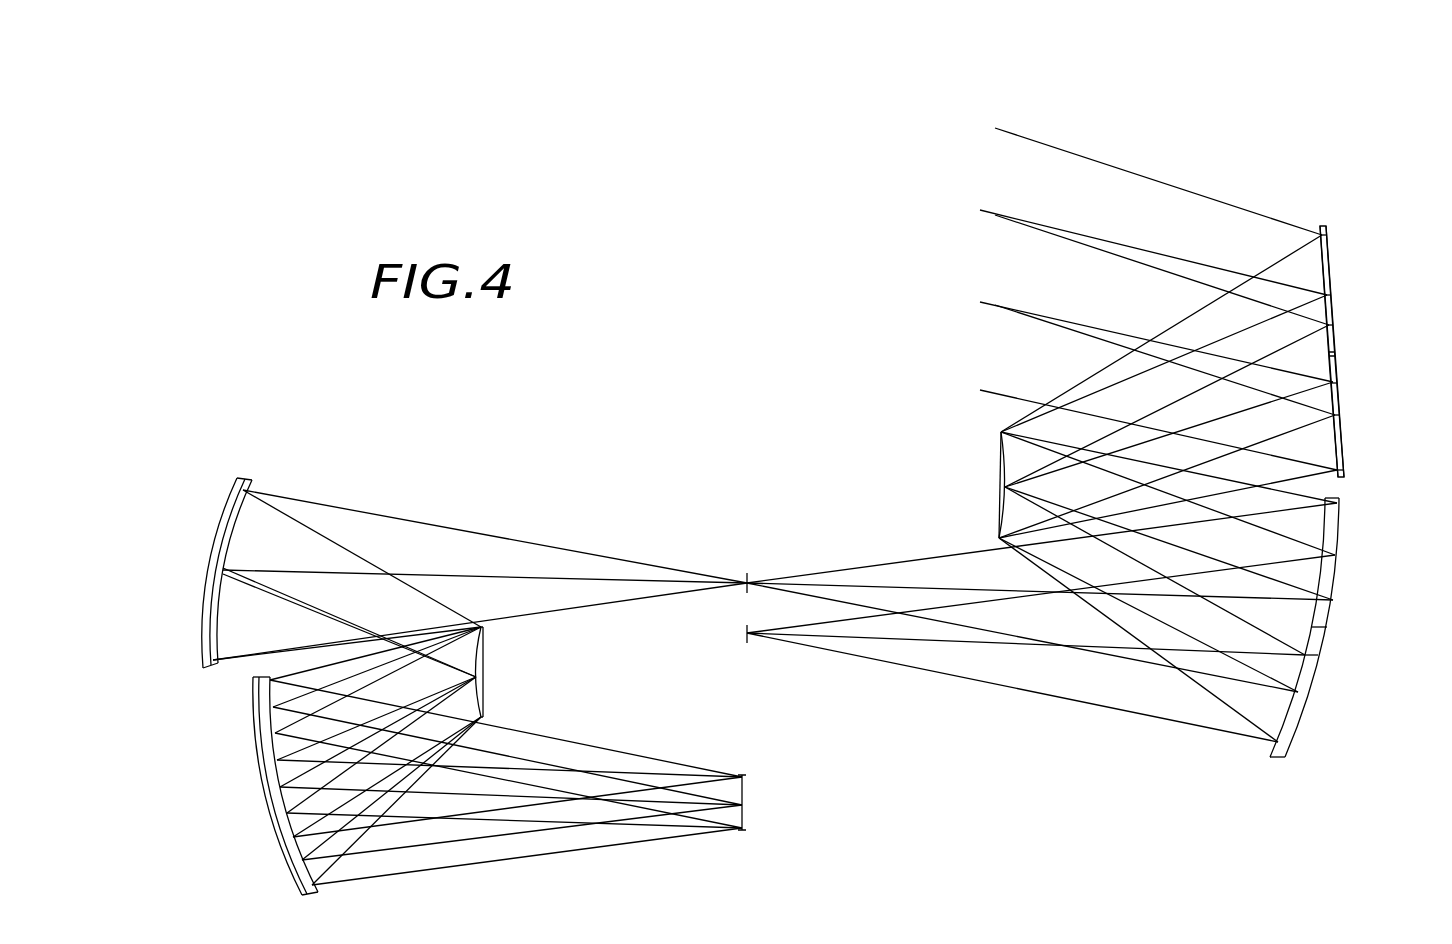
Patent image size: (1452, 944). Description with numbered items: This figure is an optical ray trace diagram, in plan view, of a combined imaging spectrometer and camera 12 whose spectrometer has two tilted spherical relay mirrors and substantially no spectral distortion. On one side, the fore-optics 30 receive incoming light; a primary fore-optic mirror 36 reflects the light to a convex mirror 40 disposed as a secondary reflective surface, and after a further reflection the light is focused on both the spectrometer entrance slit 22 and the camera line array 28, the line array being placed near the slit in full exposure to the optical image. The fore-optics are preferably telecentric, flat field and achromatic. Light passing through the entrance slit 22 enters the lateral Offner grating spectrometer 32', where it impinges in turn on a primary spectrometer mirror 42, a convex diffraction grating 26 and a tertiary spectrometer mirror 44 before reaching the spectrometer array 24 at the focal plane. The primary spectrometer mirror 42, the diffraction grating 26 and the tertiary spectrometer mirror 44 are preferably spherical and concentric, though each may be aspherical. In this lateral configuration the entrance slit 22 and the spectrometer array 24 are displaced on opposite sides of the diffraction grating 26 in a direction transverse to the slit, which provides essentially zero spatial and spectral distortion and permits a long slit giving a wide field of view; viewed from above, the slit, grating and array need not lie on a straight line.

The combined imaging spectrometer and camera 12 is at (905, 110).
The fore-optics 30 is at (1130, 169).
The primary fore-optic mirror 36 is at (1343, 335).
The convex mirror 40 is at (998, 468).
The entrance slit 22 is at (746, 578).
The line array 28 is at (745, 637).
The Offner grating spectrometer 32' is at (416, 478).
The primary spectrometer mirror 42 is at (215, 570).
The tertiary spectrometer mirror 44 is at (262, 808).
The convex diffraction grating 26 is at (485, 670).
The spectrometer array 24 is at (745, 805).